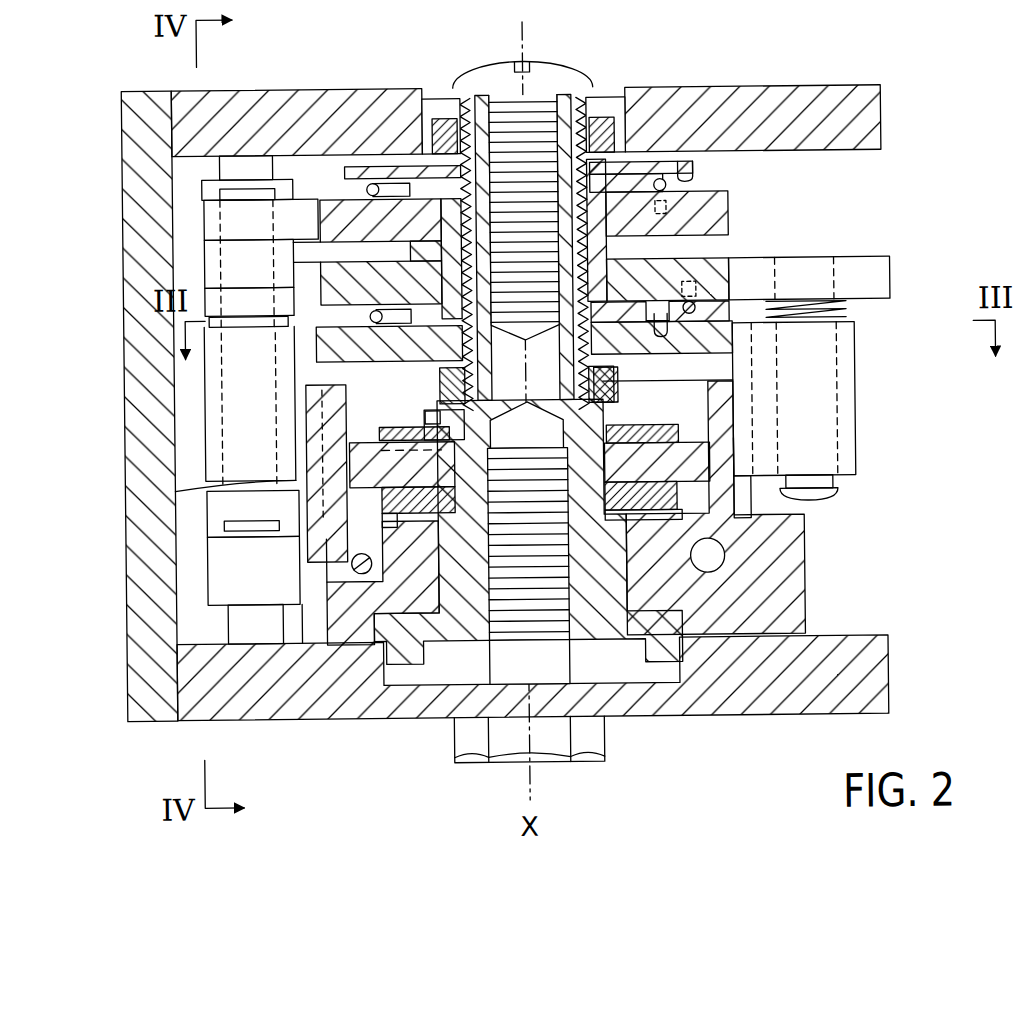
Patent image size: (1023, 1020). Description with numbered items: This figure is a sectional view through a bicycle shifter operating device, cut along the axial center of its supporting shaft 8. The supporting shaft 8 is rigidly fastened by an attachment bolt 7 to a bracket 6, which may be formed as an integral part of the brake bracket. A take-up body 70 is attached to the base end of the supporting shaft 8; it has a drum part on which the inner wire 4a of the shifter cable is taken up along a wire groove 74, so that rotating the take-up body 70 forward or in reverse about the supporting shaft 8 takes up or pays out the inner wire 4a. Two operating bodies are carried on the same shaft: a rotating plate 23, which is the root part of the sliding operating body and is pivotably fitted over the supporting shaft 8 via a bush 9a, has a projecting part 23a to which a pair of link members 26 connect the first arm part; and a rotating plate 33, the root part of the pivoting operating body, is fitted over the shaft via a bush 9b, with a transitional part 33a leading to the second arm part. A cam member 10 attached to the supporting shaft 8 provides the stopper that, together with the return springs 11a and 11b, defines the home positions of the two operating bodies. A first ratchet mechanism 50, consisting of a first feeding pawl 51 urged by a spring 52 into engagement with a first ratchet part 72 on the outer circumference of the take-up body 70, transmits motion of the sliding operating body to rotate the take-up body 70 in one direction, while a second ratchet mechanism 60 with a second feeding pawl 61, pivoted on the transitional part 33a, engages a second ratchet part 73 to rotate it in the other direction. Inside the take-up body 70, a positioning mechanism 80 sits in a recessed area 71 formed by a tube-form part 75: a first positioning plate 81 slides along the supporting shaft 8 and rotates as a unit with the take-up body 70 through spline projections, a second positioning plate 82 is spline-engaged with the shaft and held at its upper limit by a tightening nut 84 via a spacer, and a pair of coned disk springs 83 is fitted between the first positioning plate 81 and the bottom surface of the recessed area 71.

The inner wire 4a is at (310, 583).
The bracket 6 is at (722, 708).
The attachment bolt 7 is at (602, 735).
The supporting shaft 8 is at (620, 592).
The bush 9a is at (624, 177).
The bush 9b is at (652, 247).
The cam member 10 is at (722, 348).
The return spring 11a is at (702, 187).
The return spring 11b is at (702, 292).
The rotating plate 23 is at (342, 204).
The projecting part 23a is at (230, 219).
The link members 26 is at (245, 297).
The rotating plate 33 is at (702, 264).
The transitional part 33a is at (891, 283).
The first ratchet mechanism 50 is at (178, 450).
The first feeding pawl 51 is at (215, 485).
The spring 52 is at (245, 322).
The second ratchet mechanism 60 is at (847, 424).
The second feeding pawl 61 is at (850, 428).
The take-up body 70 is at (334, 600).
The recessed area 71 is at (737, 401).
The first ratchet part 72 is at (298, 513).
The second ratchet part 73 is at (767, 508).
The wire groove 74 is at (330, 558).
The tube-form part 75 is at (735, 443).
The positioning mechanism 80 is at (346, 465).
The first positioning plate 81 is at (356, 456).
The second positioning plate 82 is at (446, 426).
The coned disk springs 83 is at (431, 494).
The tightening nut 84 is at (702, 401).